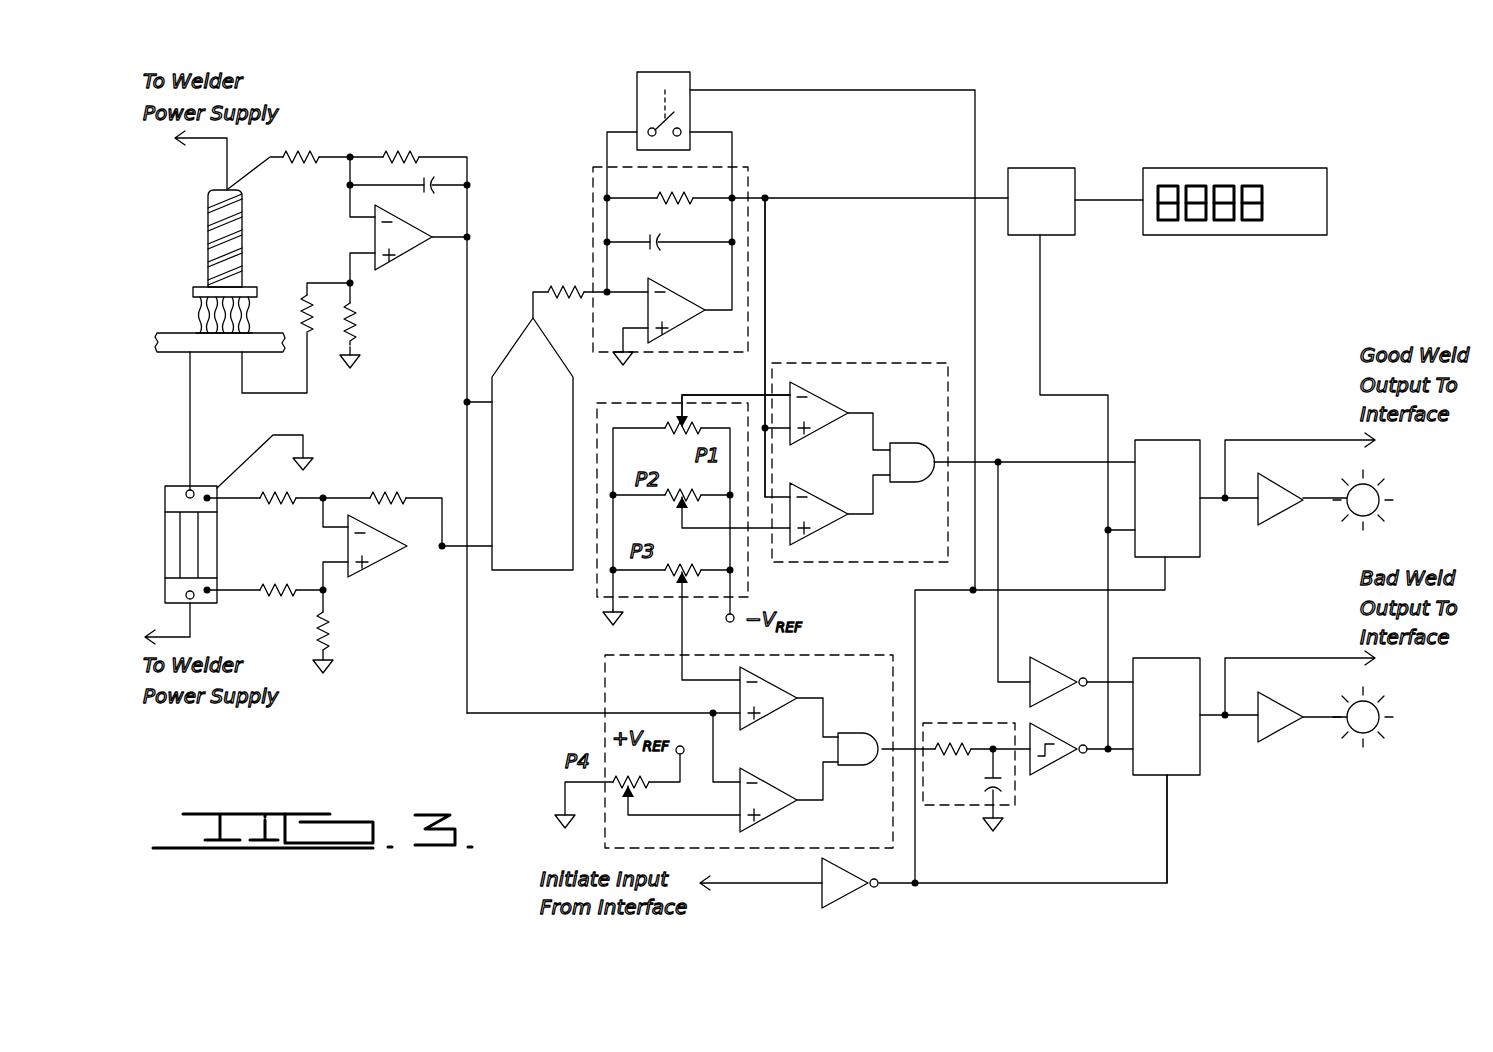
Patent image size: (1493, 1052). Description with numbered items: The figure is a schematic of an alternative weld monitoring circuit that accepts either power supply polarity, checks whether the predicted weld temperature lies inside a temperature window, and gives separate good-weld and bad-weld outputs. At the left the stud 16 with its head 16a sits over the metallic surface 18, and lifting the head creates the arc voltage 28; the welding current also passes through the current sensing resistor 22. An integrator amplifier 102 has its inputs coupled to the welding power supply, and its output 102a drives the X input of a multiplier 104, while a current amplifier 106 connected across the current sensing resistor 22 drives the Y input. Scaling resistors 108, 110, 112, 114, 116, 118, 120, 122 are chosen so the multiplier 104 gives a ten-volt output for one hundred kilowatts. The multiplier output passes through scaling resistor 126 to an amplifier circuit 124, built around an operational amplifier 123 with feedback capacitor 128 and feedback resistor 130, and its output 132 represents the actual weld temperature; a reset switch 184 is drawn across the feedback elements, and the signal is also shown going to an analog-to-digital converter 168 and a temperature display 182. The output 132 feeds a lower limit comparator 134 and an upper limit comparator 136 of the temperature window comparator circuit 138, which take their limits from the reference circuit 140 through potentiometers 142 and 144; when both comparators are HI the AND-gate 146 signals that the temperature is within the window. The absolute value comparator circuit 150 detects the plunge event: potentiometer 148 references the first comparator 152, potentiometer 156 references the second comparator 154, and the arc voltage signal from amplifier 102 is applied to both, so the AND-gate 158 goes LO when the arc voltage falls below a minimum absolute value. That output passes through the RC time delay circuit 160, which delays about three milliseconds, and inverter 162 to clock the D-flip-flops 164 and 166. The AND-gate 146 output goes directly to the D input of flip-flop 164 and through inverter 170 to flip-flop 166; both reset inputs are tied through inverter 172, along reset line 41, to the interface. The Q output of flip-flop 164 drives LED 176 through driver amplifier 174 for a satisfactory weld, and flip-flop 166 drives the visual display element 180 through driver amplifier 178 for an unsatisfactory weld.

The stud 16 is at (205, 212).
The head of the stud 16a is at (193, 290).
The arc voltage 28 is at (196, 316).
The metallic surface 18 is at (168, 358).
The current sensing resistor 22 is at (172, 490).
The integrator amplifier 102 is at (404, 254).
The output of the integrator amplifier 102a is at (468, 237).
The multiplier 104 is at (510, 572).
The current amplifier 106 is at (386, 556).
The scaling resistor 108 is at (316, 156).
The scaling resistor 110 is at (418, 156).
The scaling resistor 112 is at (305, 302).
The scaling resistor 114 is at (354, 326).
The scaling resistor 116 is at (284, 504).
The scaling resistor 118 is at (396, 496).
The scaling resistor 120 is at (284, 600).
The scaling resistor 122 is at (326, 632).
The integrator operational amplifier 123 is at (700, 316).
The amplifier circuit 124 is at (593, 190).
The scaling resistor 126 is at (569, 290).
The feedback capacitor 128 is at (660, 250).
The feedback resistor 130 is at (685, 196).
The output of the amplifier circuit 132 is at (745, 292).
The lower limit comparator 134 is at (828, 408).
The upper limit comparator 136 is at (823, 504).
The temperature window comparator circuit 138 is at (873, 361).
The reference circuit 140 is at (597, 600).
The potentiometer 142 is at (680, 414).
The potentiometer 144 is at (675, 505).
The AND-gate 146 is at (896, 492).
The potentiometer 148 is at (686, 574).
The absolute value comparator circuit 150 is at (605, 687).
The first comparator 152 is at (781, 698).
The second comparator 154 is at (771, 790).
The potentiometer 156 is at (648, 792).
The AND-gate 158 is at (866, 780).
The RC time delay circuit 160 is at (932, 808).
The inverter 162 is at (1058, 775).
The D-flip-flop 164 is at (1182, 440).
The D-flip-flop 166 is at (1180, 660).
The analog to digital converter 168 is at (1068, 232).
The inverter 170 is at (1046, 666).
The inverter 172 is at (860, 888).
The driver amplifier 174 is at (1280, 518).
The LED 176 is at (1380, 494).
The driver amplifier 178 is at (1283, 735).
The visual display element 180 is at (1380, 726).
The temperature display 182 is at (1268, 236).
The reset switch 184 is at (637, 90).
The reset line 41 is at (1180, 776).